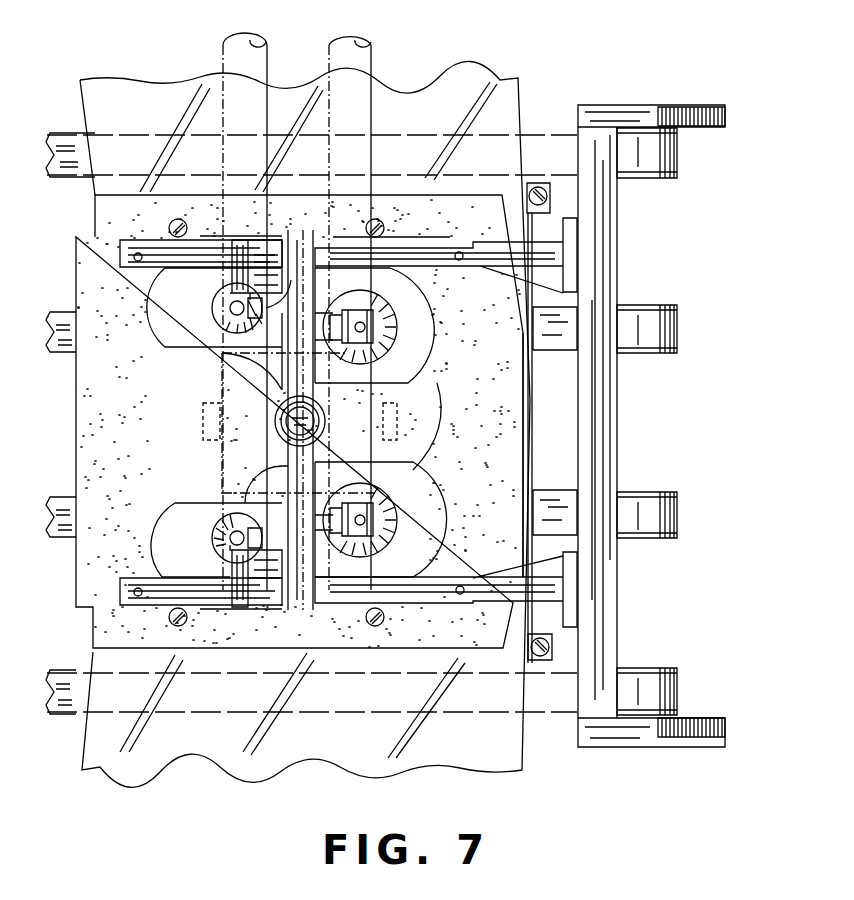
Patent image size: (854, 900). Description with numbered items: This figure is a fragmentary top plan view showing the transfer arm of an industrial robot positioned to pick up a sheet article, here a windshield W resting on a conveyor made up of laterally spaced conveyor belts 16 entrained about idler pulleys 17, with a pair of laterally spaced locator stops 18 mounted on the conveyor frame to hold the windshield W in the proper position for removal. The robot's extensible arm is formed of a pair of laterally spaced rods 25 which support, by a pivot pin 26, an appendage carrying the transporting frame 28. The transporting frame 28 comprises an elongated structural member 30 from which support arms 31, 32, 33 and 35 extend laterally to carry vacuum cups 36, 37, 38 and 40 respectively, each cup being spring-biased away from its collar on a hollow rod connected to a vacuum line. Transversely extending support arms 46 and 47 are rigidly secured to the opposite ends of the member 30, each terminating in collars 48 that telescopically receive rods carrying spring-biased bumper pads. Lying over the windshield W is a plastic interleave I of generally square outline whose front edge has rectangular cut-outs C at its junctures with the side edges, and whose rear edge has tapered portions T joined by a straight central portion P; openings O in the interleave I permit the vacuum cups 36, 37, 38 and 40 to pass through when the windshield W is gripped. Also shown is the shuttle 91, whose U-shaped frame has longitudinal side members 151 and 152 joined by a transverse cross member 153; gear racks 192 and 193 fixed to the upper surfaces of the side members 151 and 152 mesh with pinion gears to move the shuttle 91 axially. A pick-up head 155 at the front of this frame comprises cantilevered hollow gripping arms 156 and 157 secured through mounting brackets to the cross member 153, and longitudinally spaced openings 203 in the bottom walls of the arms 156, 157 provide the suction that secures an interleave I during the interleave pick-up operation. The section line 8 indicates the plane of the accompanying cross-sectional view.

The section line 8- 8 is at (178, 37).
The conveyor belts 16 is at (632, 165).
The idler pulleys 17 is at (662, 178).
The locator stops 18 is at (541, 186).
The rods 25 is at (338, 62).
The pivot pin 26 is at (203, 430).
The transporting frame 28 is at (225, 620).
The elongated structural member 30 is at (290, 474).
The support arm 31 is at (329, 422).
The support arm 32 is at (332, 500).
The support arm 33 is at (273, 576).
The support arm 35 is at (271, 274).
The vacuum cup 36 is at (369, 337).
The vacuum cup 37 is at (370, 524).
The vacuum cup 38 is at (216, 540).
The vacuum cup 40 is at (226, 322).
The transversely extending support arm 46 is at (268, 238).
The transversely extending support arm 47 is at (268, 613).
The collars 48 is at (168, 226).
The shuttle 91 is at (651, 432).
The side member 151 is at (626, 745).
The side member 152 is at (626, 114).
The cross member 153 is at (610, 283).
The pick-up head 155 is at (429, 603).
The gripping arm 156 is at (447, 598).
The gripping arm 157 is at (445, 252).
The gear rack 192 is at (700, 742).
The gear rack 193 is at (692, 110).
The openings 203 is at (136, 263).
The cut-outs C is at (80, 235).
The plastic interleave I is at (421, 197).
The openings O is at (429, 426).
The straight central portion P is at (523, 423).
The tapered portions T is at (507, 207).
The windshield W is at (483, 767).